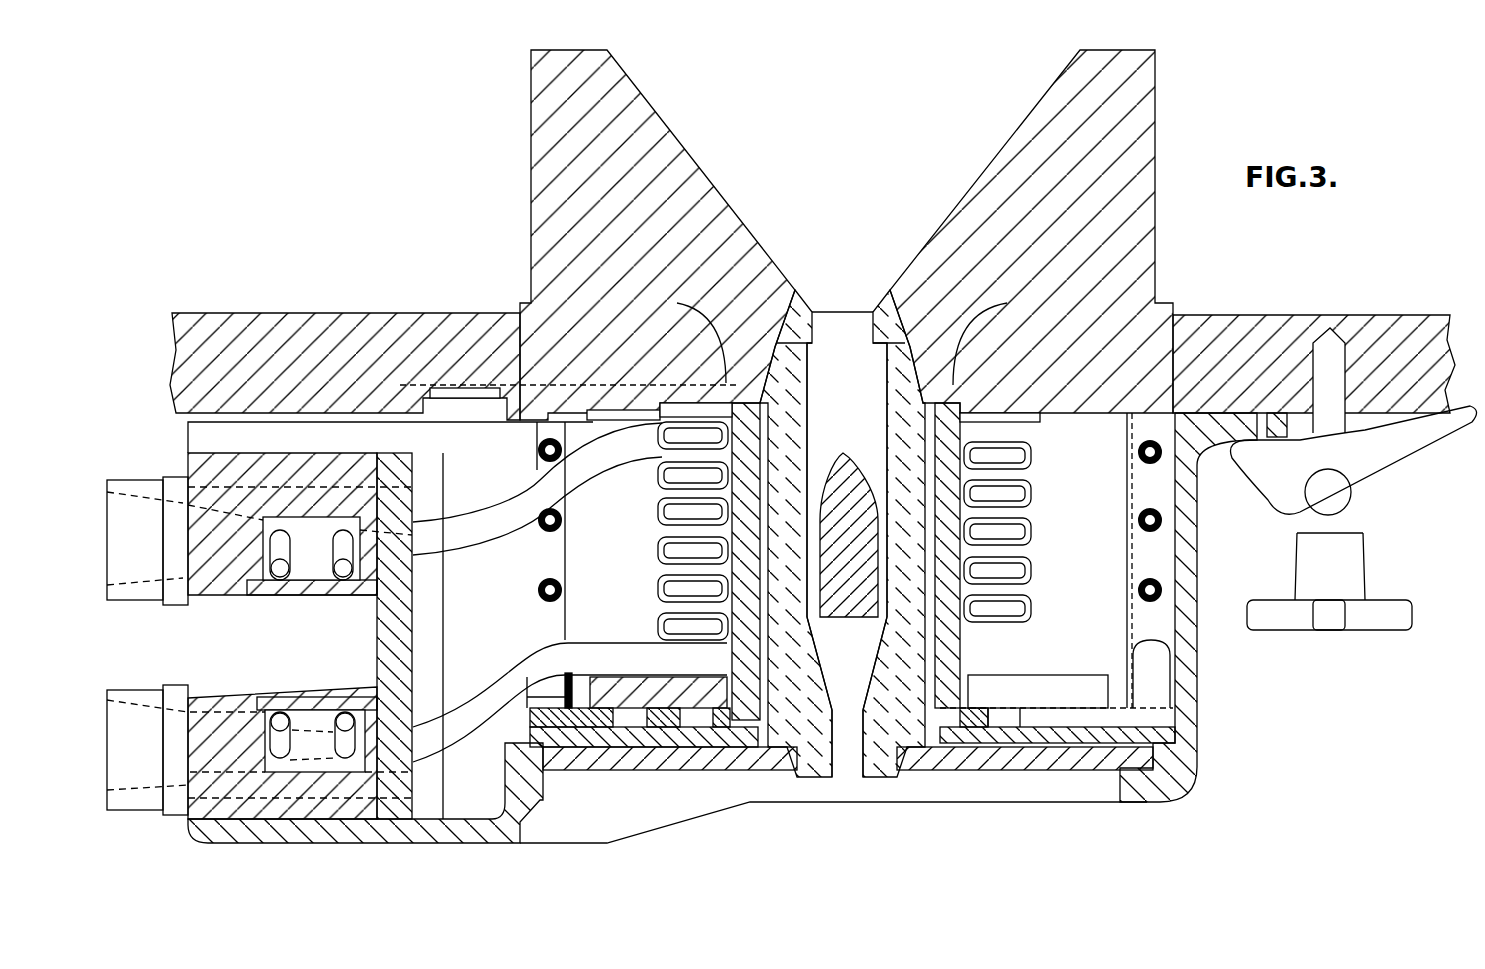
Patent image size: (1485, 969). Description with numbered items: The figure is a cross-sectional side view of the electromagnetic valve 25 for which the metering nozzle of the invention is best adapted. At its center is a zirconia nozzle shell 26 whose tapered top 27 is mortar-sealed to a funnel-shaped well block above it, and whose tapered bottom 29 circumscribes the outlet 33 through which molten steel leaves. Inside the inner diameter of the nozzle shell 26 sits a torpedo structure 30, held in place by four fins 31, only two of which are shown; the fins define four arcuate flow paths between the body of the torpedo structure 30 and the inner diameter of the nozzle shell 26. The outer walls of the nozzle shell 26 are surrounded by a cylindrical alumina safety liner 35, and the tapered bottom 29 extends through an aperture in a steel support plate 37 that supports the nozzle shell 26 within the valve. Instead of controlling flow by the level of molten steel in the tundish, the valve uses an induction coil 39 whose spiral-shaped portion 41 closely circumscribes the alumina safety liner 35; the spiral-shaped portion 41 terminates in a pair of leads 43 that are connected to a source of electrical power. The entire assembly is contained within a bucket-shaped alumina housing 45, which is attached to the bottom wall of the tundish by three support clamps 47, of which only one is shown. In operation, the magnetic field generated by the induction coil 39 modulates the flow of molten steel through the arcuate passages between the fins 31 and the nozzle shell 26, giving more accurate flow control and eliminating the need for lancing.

The electromagnetic valve 25 is at (478, 272).
The nozzle shell 26 is at (797, 712).
The tapered top 27 is at (786, 340).
The tapered bottom 29 is at (822, 760).
The torpedo structure 30 is at (853, 467).
The fins 31 is at (887, 522).
The outlet 33 is at (840, 763).
The alumina safety liner 35 is at (737, 590).
The steel support plate 37 is at (686, 753).
The induction coil 39 is at (652, 470).
The spiral-shaped portion 41 is at (1034, 570).
The leads 43 is at (318, 598).
The alumina housing 45 is at (1187, 713).
The support clamps 47 is at (1340, 494).